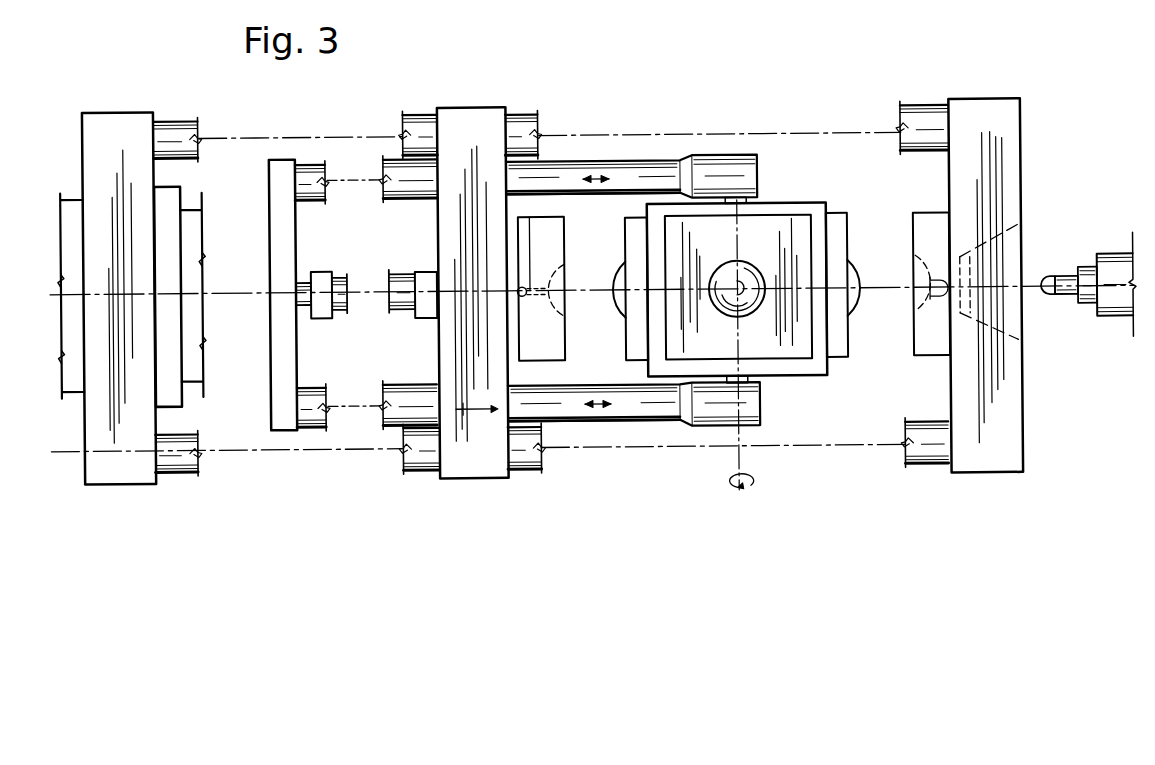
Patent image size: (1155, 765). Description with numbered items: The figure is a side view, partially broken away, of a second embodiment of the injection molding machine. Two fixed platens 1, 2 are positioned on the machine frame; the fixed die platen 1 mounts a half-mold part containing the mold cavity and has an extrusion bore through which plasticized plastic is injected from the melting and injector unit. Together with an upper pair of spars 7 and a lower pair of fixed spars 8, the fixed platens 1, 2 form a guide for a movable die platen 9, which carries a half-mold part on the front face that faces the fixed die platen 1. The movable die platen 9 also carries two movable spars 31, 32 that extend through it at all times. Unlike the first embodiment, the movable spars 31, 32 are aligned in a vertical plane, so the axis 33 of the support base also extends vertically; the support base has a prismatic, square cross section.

The fixed die platen 1 is at (978, 116).
The fixed platen 2 is at (115, 126).
The upper pair of spars 7 is at (179, 124).
The lower pair of fixed spars 8 is at (172, 456).
The movable die platen 9 is at (464, 122).
The movable spar 31 is at (644, 394).
The movable spar 32 is at (562, 175).
The axis of the support base 33 is at (738, 234).